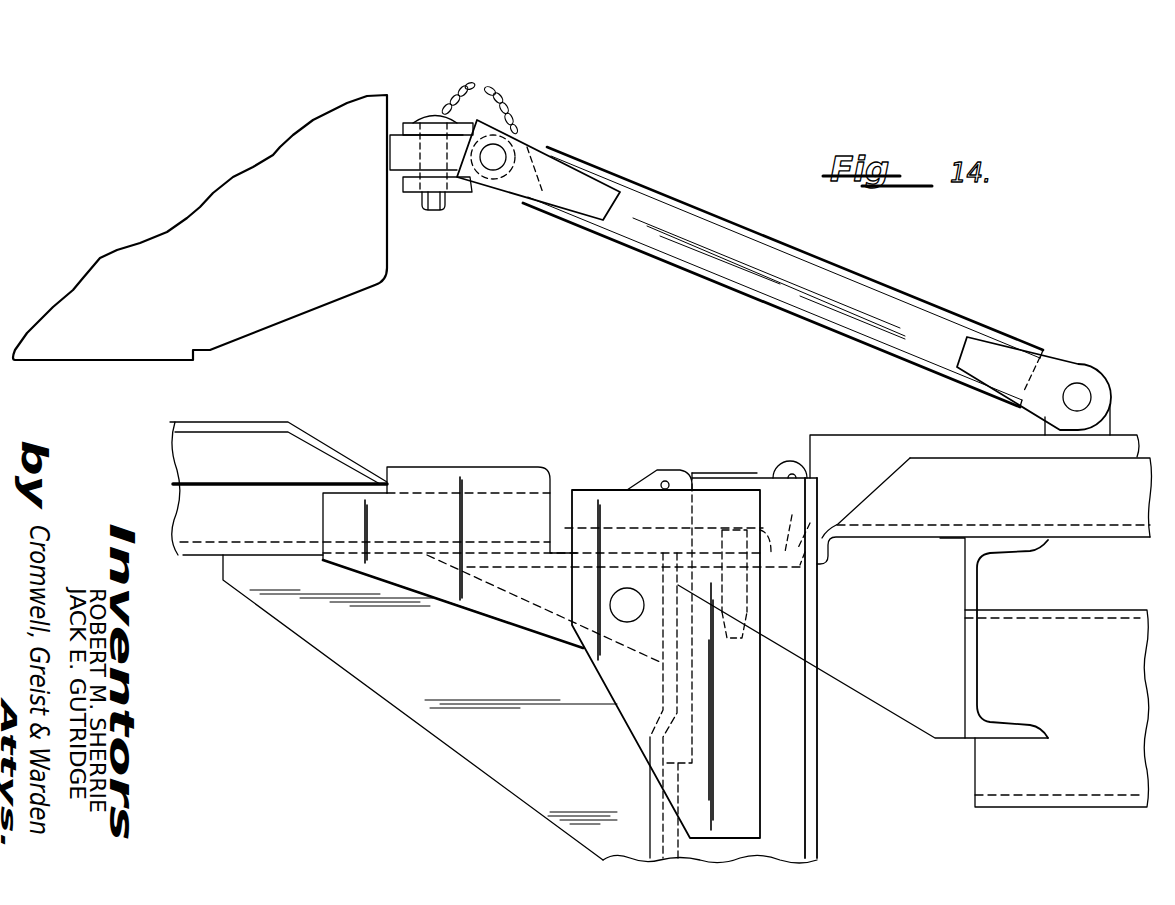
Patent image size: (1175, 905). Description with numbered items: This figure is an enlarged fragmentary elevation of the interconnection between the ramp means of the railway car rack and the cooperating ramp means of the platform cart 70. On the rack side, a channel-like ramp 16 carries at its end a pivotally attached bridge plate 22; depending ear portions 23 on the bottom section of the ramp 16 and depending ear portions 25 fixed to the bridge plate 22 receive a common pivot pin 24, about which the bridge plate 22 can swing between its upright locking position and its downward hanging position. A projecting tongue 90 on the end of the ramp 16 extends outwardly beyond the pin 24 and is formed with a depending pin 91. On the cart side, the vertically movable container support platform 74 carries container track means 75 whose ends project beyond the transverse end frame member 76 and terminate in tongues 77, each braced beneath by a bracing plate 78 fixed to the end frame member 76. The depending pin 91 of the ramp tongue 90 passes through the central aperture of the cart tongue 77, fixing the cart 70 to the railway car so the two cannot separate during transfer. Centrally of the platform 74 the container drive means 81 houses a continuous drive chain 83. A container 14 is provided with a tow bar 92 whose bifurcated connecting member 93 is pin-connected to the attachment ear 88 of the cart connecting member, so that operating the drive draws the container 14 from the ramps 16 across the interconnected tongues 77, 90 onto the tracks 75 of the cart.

The container 14 is at (388, 243).
The ramp 16 is at (246, 420).
The bridge plate 22 is at (818, 793).
The depending ear portion 23 is at (500, 613).
The pivot pin 24 is at (632, 622).
The depending ear portion 25 is at (638, 730).
The platform cart 70 is at (855, 410).
The container support platform 74 is at (1086, 688).
The container track means 75 is at (1012, 504).
The transverse end frame member 76 is at (968, 596).
The tongue 77 is at (785, 530).
The bracing plate 78 is at (863, 669).
The container drive means 81 is at (918, 435).
The drive chain 83 is at (683, 470).
The attachment ear 88 is at (1112, 421).
The projecting tongue 90 is at (705, 527).
The depending pin 91 is at (748, 598).
The tow bar 92 is at (836, 264).
The bifurcated connecting member 93 is at (1075, 361).